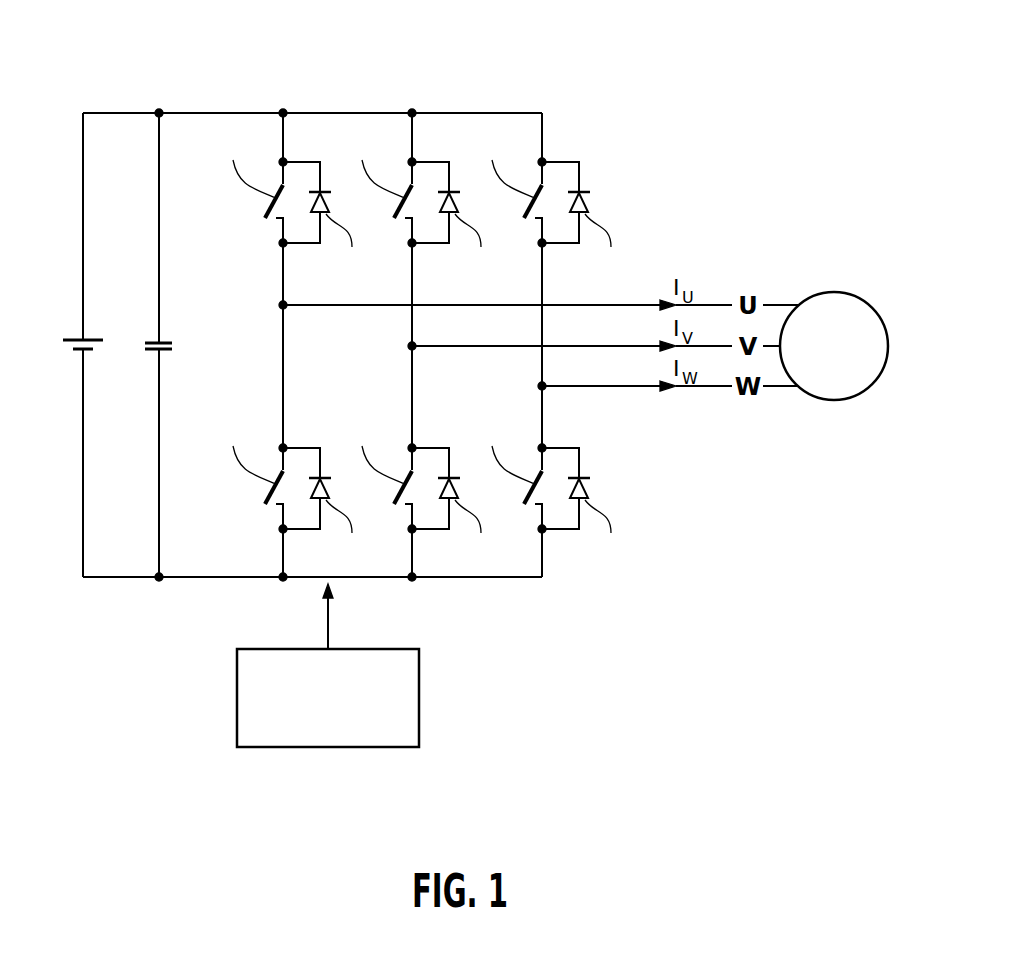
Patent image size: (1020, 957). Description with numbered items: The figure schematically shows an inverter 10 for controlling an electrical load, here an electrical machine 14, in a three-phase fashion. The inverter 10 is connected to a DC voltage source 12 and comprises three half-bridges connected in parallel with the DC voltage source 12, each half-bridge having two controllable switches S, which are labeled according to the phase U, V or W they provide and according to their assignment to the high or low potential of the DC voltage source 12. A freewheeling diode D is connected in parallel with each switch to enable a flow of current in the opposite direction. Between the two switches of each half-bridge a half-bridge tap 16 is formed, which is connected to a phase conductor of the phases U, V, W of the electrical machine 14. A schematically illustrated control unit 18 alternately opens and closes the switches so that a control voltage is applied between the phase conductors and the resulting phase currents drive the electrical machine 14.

The inverter 10 is at (684, 95).
The DC voltage source 12 is at (70, 338).
The electrical machine 14 is at (833, 292).
The half-bridge tap 16 is at (279, 305).
The control unit 18 is at (331, 749).